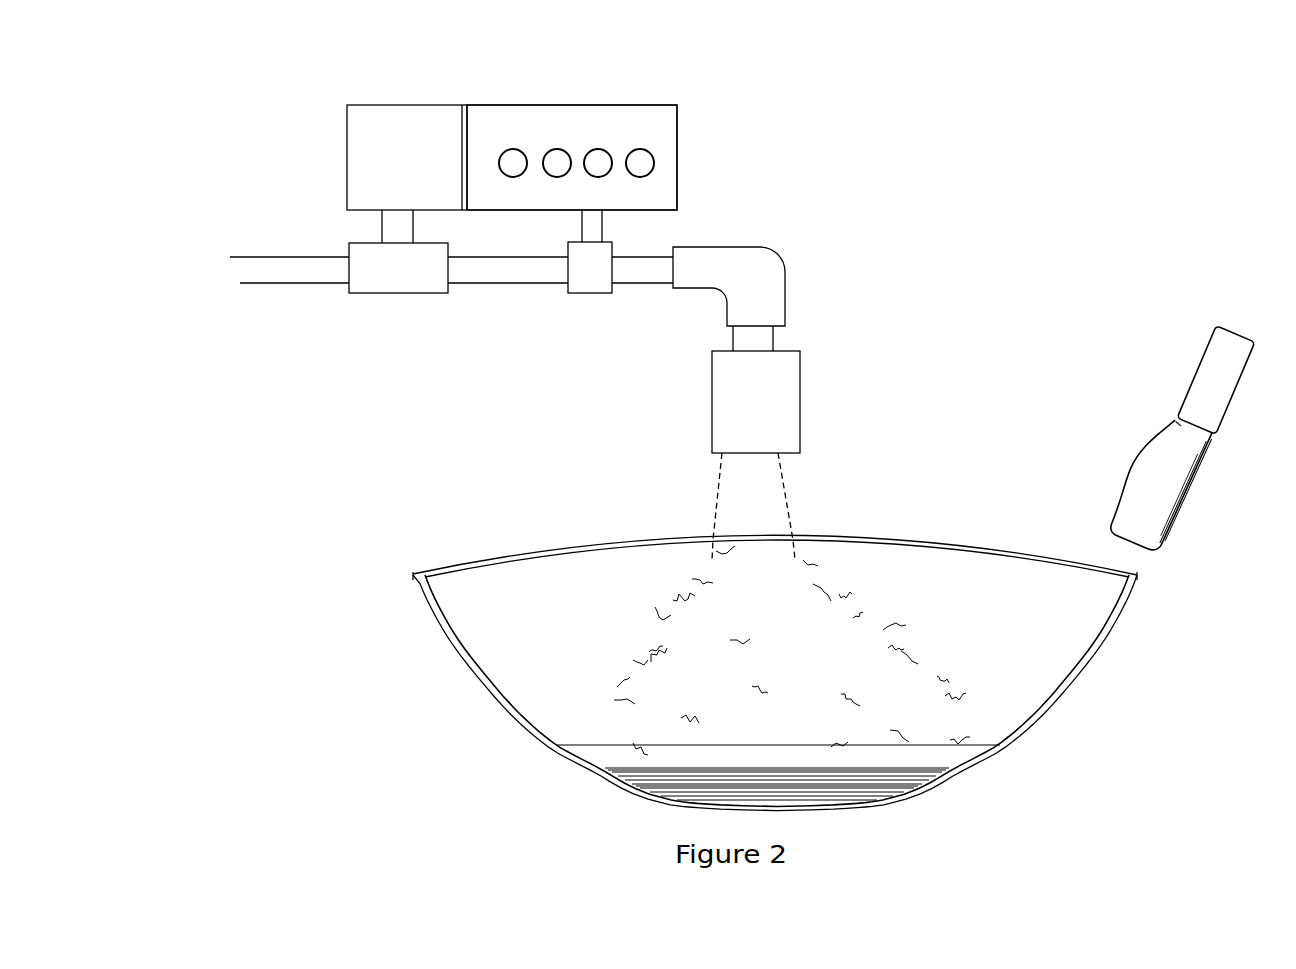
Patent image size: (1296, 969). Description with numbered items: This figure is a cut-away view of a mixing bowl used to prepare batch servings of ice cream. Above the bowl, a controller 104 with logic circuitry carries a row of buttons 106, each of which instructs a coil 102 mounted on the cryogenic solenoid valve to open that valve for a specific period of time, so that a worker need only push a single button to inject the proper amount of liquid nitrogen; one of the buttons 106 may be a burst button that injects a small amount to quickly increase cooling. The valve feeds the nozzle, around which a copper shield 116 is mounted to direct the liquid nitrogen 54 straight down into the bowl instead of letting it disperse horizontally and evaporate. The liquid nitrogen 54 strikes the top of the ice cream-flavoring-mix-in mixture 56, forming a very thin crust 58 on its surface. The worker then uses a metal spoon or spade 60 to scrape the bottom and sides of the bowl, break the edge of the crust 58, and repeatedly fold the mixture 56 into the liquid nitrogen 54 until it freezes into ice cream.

The coil 102 is at (512, 157).
The controller 104 is at (657, 187).
The buttons 106 is at (515, 160).
The copper shield 116 is at (753, 383).
The liquid nitrogen 54 is at (678, 743).
The ice cream-flavoring-mix-in mixture 56 is at (682, 778).
The crust 58 is at (885, 768).
The spade 60 is at (1164, 483).